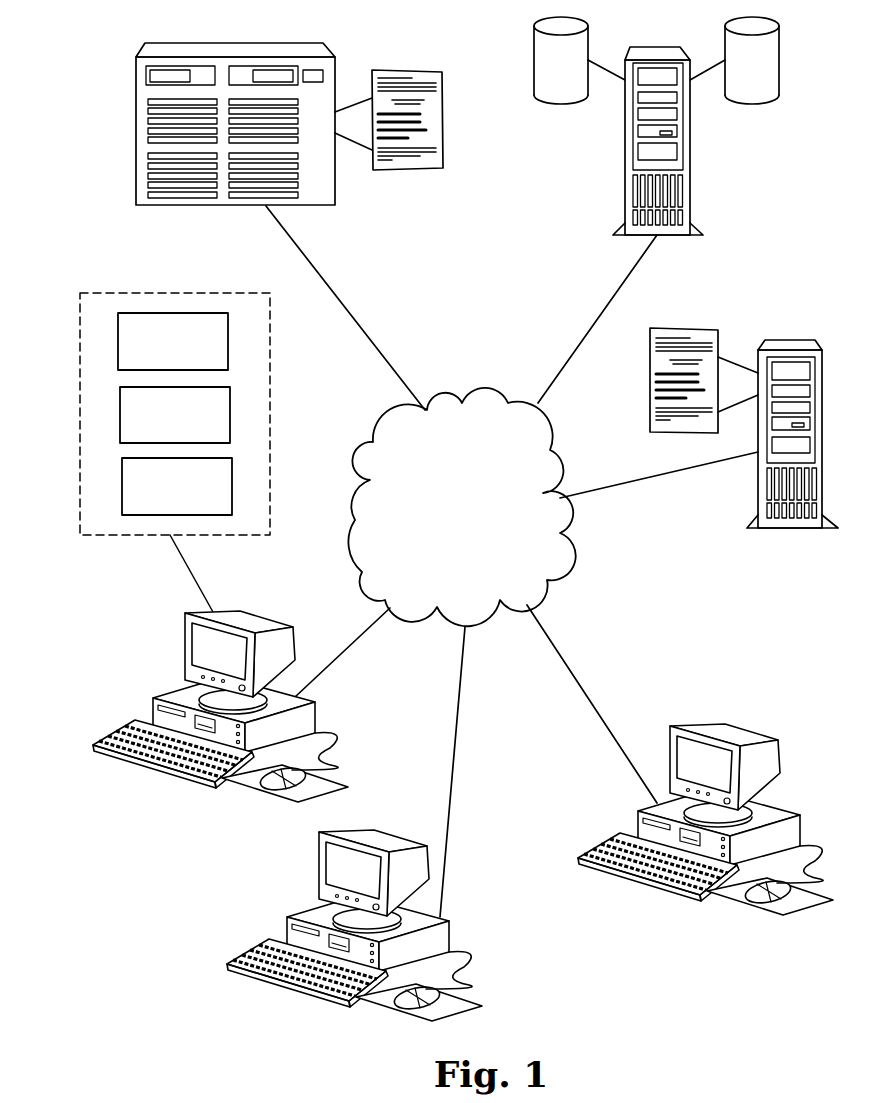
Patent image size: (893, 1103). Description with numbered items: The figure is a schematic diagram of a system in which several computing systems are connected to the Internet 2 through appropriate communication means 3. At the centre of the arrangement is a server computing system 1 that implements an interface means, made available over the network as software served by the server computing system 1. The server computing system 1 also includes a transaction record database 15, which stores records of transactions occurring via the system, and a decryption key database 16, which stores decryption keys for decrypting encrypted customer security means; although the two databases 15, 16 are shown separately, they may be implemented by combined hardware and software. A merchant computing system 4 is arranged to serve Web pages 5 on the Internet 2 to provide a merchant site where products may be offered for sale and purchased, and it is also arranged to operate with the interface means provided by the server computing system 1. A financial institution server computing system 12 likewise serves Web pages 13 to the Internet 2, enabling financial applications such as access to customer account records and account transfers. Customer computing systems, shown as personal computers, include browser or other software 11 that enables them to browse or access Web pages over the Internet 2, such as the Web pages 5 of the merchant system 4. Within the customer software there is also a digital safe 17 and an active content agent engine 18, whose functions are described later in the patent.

The server computing system 1 is at (687, 156).
The Internet 2 is at (448, 399).
The communication means 3 is at (316, 268).
The merchant computing system 4 is at (240, 50).
The Web pages 5 is at (418, 72).
The browser or other software 11 is at (205, 452).
The financial institution server computing system 12 is at (787, 346).
The Web pages 13 is at (698, 334).
The transaction record database 15 is at (582, 42).
The decryption key database 16 is at (773, 42).
The digital safe 17 is at (223, 324).
The active content agent engine 18 is at (221, 417).